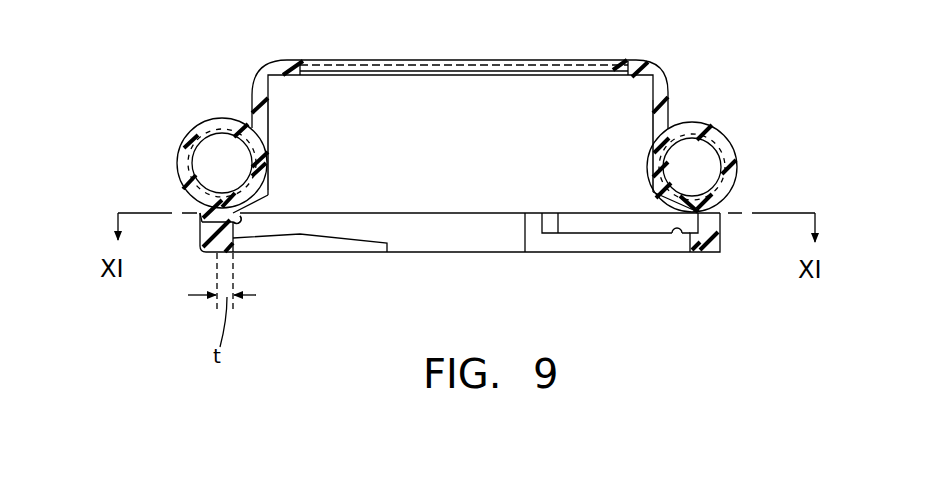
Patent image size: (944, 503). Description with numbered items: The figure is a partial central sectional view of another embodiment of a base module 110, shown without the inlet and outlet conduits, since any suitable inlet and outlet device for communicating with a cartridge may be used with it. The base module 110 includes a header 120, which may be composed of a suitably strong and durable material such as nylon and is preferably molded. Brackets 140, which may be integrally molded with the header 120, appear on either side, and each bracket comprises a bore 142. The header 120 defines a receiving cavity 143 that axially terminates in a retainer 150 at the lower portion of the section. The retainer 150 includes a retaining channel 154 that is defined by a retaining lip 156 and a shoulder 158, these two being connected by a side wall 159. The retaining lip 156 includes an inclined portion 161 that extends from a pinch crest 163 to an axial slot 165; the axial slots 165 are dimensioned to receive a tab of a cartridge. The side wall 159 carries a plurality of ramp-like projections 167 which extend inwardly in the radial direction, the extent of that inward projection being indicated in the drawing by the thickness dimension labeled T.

The base module 110 is at (258, 48).
The header 120 is at (669, 68).
The receiving cavity 143 is at (297, 99).
The brackets 140 is at (190, 133).
The bore 142 is at (203, 142).
The axial slot 165 is at (445, 242).
The retaining channel 154 is at (603, 223).
The pinch crest 163 is at (300, 234).
The inclined portion 161 is at (357, 241).
The ramp-like projections 167 is at (263, 220).
The shoulder 158 is at (237, 243).
The retaining lip 156 is at (250, 252).
The side wall 159 is at (231, 223).
The retainer 150 is at (205, 230).